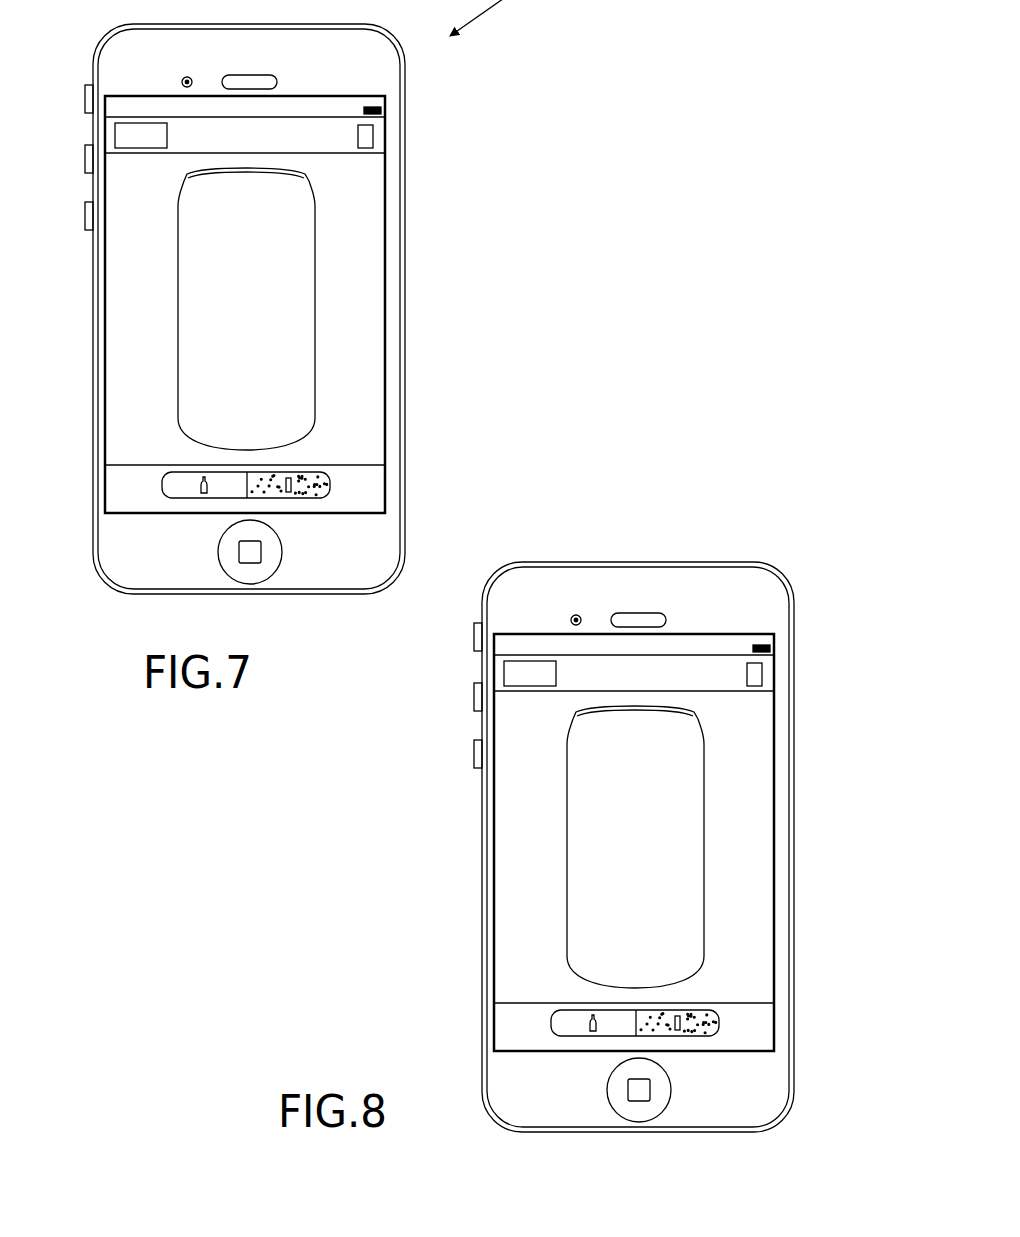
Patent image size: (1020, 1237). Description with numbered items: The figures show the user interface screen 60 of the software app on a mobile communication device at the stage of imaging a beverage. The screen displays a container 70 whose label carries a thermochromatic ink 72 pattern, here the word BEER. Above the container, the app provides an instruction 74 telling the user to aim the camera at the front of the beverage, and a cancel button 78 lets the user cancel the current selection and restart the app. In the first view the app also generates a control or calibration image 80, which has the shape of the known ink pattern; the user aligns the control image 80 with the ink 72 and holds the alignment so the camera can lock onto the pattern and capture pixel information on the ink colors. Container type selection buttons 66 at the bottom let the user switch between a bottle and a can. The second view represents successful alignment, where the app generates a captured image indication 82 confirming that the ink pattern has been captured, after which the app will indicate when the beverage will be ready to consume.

In FIG. 8, the user interface screen 60 is at (693, 847).
In FIG. 7, the container type selection buttons 66 is at (172, 483).
In FIG. 8, the container type selection buttons 66 is at (650, 1019).
In FIG. 7, the container 70 is at (305, 225).
In FIG. 8, the container 70 is at (703, 847).
In FIG. 7, the thermochromatic ink 72 is at (190, 292).
In FIG. 7, the instruction 74 is at (288, 128).
In FIG. 8, the instruction 74 is at (664, 639).
In FIG. 7, the cancel button 78 is at (148, 130).
In FIG. 8, the cancel button 78 is at (488, 704).
In FIG. 7, the control or calibration image 80 is at (340, 275).
In FIG. 8, the captured image indication 82 is at (711, 817).